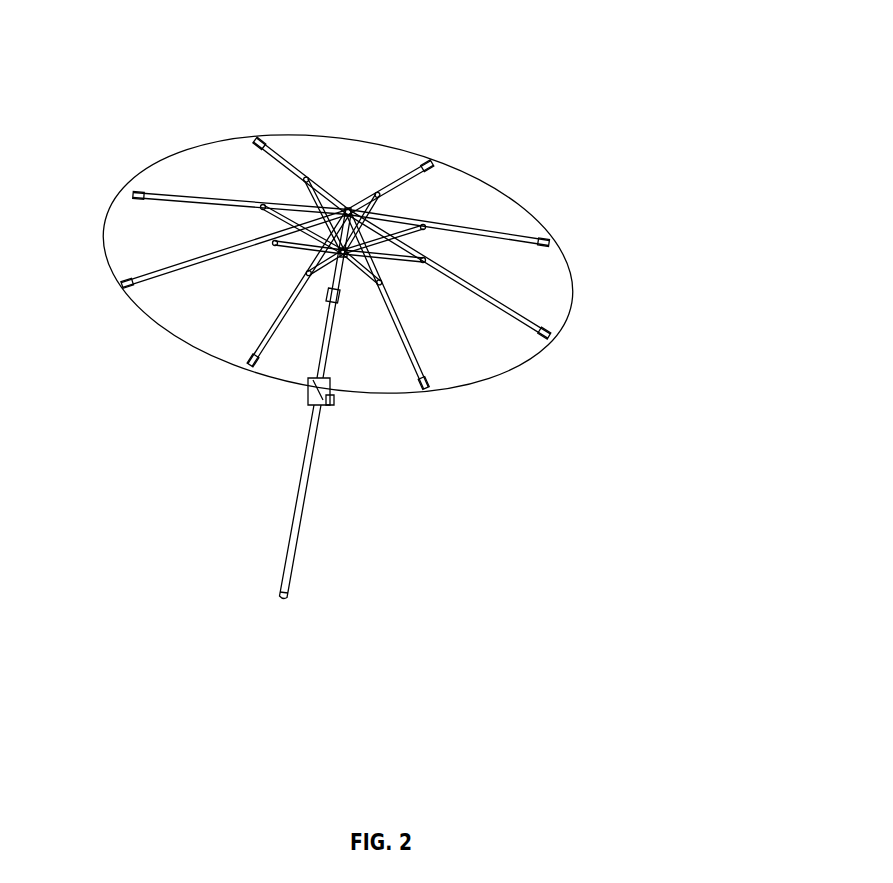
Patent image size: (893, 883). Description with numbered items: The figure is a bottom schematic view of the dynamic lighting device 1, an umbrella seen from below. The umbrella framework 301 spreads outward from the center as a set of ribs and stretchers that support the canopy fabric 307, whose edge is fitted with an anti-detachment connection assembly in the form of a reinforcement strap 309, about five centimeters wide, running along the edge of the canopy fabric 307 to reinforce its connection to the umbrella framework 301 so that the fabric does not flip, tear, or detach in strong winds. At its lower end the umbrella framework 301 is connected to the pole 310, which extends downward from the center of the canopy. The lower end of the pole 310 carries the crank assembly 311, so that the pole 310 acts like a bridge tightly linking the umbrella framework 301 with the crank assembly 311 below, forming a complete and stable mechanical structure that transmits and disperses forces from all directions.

The dynamic lighting device 1 is at (445, 132).
The umbrella framework 301 is at (170, 272).
The canopy fabric 307 is at (542, 288).
The reinforcement strap 309 is at (332, 391).
The pole 310 is at (320, 357).
The crank assembly 311 is at (330, 398).